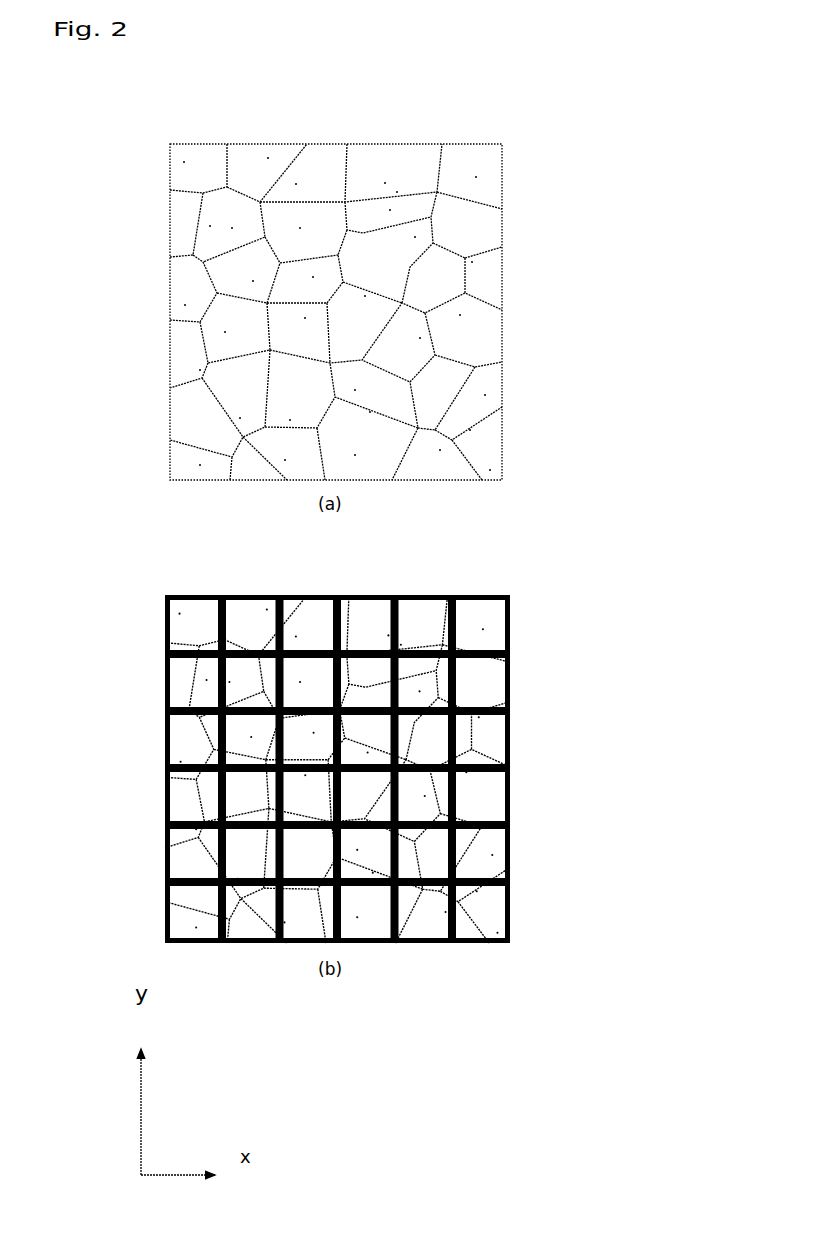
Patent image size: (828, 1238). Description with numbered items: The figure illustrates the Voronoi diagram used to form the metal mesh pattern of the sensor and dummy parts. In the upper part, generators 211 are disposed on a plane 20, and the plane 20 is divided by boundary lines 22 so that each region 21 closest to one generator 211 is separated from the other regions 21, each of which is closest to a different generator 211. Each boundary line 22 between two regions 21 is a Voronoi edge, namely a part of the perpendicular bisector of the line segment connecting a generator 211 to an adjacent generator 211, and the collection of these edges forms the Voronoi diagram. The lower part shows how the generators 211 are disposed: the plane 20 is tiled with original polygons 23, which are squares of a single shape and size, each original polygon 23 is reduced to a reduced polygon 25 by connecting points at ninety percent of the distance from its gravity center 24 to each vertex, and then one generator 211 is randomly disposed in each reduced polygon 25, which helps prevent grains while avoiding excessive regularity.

The plane 20 is at (523, 193).
The region 21 is at (487, 217).
The boundary line 22 is at (205, 297).
The generator 211 is at (473, 175).
The original polygon 23 is at (510, 800).
The gravity center 24 is at (192, 624).
The reduced polygon 25 is at (172, 658).